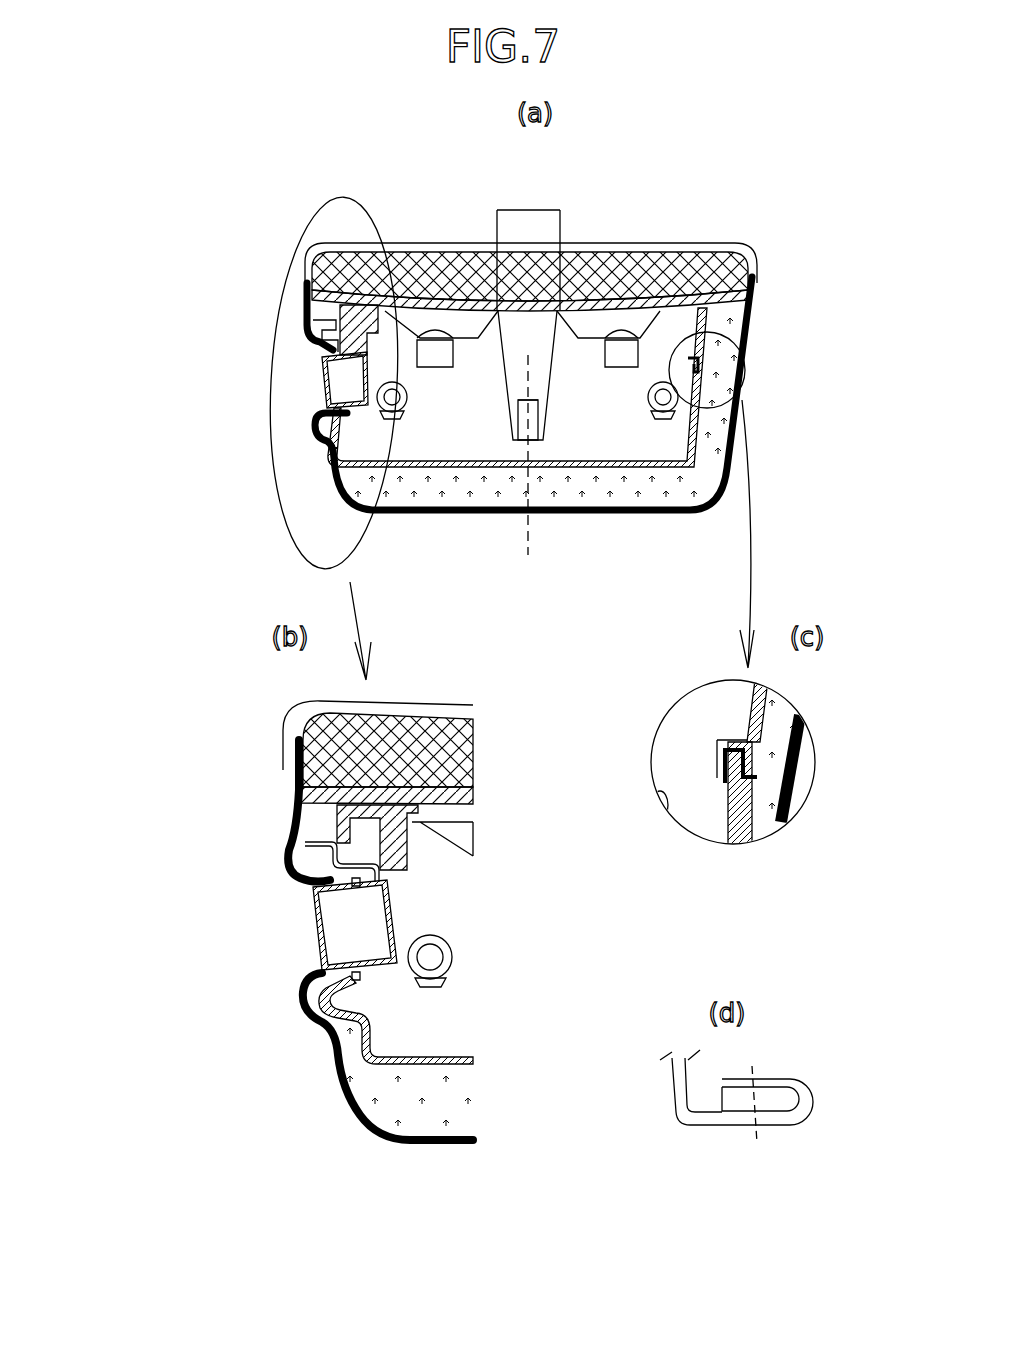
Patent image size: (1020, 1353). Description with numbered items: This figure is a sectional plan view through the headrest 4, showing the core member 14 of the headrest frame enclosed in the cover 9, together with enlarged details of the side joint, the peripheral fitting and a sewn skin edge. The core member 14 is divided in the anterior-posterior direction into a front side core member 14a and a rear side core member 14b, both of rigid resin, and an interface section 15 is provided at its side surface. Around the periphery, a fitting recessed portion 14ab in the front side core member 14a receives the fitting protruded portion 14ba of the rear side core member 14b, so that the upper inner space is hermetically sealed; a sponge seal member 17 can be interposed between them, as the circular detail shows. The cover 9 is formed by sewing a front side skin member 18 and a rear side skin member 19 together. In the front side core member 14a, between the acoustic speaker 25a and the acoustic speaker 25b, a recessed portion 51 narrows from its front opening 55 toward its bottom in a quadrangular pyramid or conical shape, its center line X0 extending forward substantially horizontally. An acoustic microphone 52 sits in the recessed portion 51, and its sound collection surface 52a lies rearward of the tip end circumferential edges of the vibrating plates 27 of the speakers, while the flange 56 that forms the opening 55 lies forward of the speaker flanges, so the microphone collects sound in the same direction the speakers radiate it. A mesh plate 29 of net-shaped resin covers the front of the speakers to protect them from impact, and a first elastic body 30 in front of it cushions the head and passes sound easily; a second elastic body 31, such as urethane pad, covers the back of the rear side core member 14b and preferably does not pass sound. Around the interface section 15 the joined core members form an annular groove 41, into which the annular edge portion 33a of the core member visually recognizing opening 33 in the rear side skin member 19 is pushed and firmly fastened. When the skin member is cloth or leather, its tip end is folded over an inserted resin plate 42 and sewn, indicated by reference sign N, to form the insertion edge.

The headrest 4 is at (297, 146).
The cover 9 is at (848, 207).
The core member 14 is at (113, 249).
The front side core member 14a is at (306, 303).
The rear side core member 14b is at (351, 478).
The fitting recessed portion 14ab is at (375, 338).
The fitting protruded portion 14ba is at (378, 358).
The interface section 15 is at (322, 388).
The seal member 17 is at (753, 777).
The front side skin member 18 is at (733, 240).
The rear side skin member 19 is at (748, 340).
The acoustic speaker 25a is at (428, 320).
The acoustic speaker 25b is at (677, 307).
The vibrating plate 27 is at (467, 313).
The mesh plate 29 is at (645, 308).
The first elastic body 30 is at (455, 280).
The second elastic body 31 is at (603, 490).
The core member visually recognizing opening 33 is at (313, 357).
The edge portion 33a is at (358, 885).
The annular groove 41 is at (274, 883).
The resin plate 42 is at (770, 1100).
The recessed portion 51 is at (521, 310).
The acoustic microphone 52 is at (540, 418).
The sound collection surface 52a is at (542, 380).
The opening 55 is at (497, 207).
The flange 56 is at (580, 305).
The center line X0 is at (527, 467).
The sewing N is at (752, 1068).